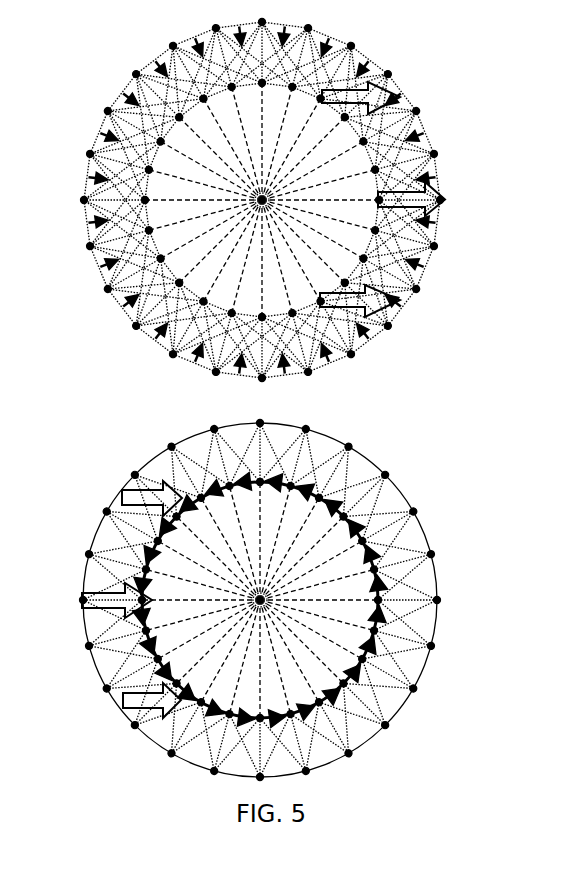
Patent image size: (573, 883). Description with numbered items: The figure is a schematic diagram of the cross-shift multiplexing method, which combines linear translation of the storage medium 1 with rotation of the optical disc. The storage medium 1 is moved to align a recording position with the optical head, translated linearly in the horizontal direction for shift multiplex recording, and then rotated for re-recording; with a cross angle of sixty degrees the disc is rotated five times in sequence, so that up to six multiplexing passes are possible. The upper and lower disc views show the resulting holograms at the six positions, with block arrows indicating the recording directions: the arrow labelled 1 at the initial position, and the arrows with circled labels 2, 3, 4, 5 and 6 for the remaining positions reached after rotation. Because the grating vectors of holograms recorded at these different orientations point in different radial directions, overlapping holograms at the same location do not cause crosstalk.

The storage medium 1 is at (435, 199).
The second load/displacement direction arrow 2 is at (389, 98).
The third load/displacement direction arrow 3 is at (387, 301).
The fourth load/displacement direction arrow 4 is at (98, 600).
The fifth load/displacement direction arrow 5 is at (129, 498).
The sixth load/displacement direction arrow 6 is at (128, 700).